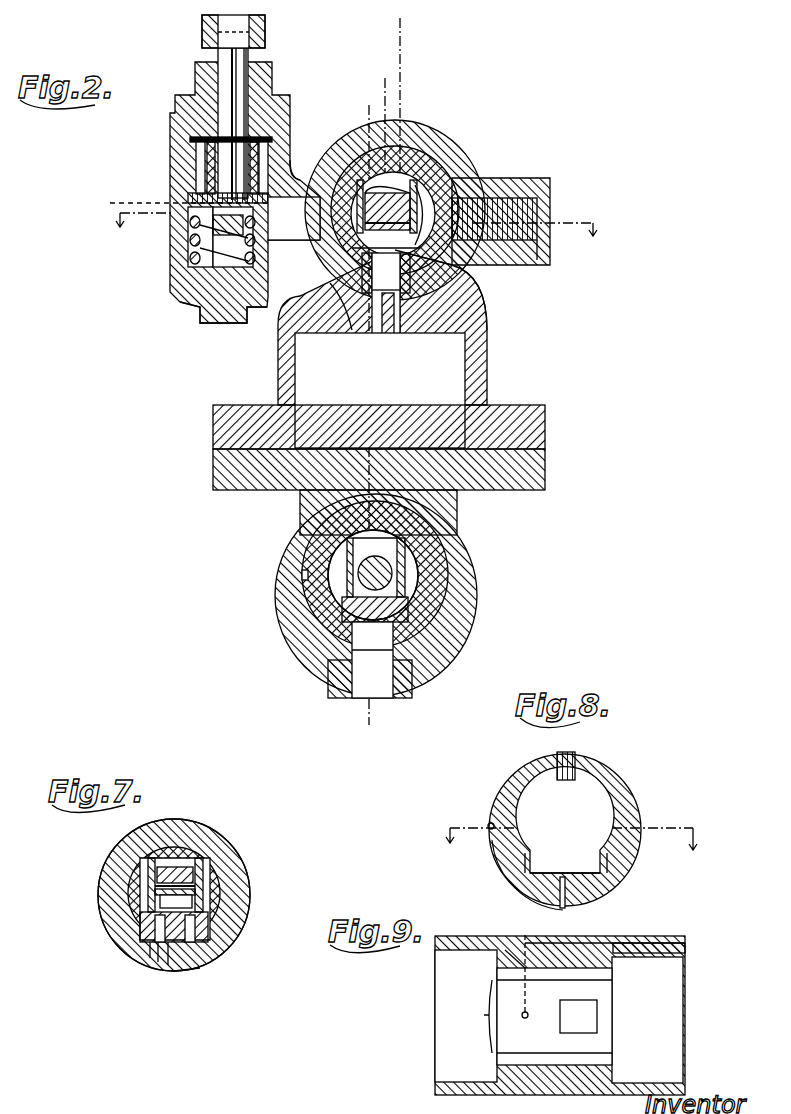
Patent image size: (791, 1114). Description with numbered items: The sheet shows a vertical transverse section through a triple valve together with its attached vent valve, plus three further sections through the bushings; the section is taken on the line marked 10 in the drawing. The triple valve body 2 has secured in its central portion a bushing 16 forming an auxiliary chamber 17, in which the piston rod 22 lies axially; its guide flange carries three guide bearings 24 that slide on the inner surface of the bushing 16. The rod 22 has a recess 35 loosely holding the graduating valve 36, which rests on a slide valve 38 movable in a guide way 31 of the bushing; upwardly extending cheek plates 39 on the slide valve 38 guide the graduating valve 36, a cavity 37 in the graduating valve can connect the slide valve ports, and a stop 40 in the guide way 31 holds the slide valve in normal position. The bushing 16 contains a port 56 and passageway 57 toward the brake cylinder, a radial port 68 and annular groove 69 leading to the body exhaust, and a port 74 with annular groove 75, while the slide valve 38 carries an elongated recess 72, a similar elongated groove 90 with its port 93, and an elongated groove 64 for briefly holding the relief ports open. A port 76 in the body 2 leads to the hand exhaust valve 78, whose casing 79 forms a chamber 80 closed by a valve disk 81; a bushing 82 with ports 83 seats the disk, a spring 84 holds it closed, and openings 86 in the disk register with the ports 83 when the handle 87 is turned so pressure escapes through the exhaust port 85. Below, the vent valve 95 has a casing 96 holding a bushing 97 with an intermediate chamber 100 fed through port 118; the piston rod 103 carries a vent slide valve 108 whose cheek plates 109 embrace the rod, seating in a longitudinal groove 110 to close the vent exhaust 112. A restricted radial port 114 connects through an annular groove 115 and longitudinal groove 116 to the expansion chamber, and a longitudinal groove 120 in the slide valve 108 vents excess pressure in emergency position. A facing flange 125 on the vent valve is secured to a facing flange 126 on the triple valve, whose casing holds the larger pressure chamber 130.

In FIG. 2, the body 2 is at (545, 185).
In FIG. 2, the fluid passage 10 is at (212, 224).
In FIG. 2, the bushing 16 is at (465, 142).
In FIG. 7, the bushing 16 is at (128, 840).
In FIG. 2, the auxiliary chamber 17 is at (455, 170).
In FIG. 7, the auxiliary chamber 17 is at (130, 903).
In FIG. 2, the piston rod 22 is at (392, 192).
In FIG. 7, the piston rod 22 is at (178, 866).
In FIG. 2, the guide bearings 24 is at (368, 190).
In FIG. 7, the guide way 31 is at (232, 940).
In FIG. 7, the recess 35 is at (200, 884).
In FIG. 2, the graduating valve 36 is at (440, 190).
In FIG. 7, the graduating valve 36 is at (198, 891).
In FIG. 7, the cavity 37 is at (195, 903).
In FIG. 2, the slide valve 38 is at (300, 300).
In FIG. 7, the slide valve 38 is at (210, 903).
In FIG. 2, the cheek plates 39 is at (360, 182).
In FIG. 7, the cheek plates 39 is at (148, 870).
In FIG. 2, the stop 40 is at (520, 262).
In FIG. 7, the port 56 is at (158, 948).
In FIG. 7, the passageway 57 is at (166, 950).
In FIG. 2, the elongated groove 64 is at (405, 295).
In FIG. 2, the radial port 68 is at (470, 300).
In FIG. 2, the annular groove 69 is at (462, 292).
In FIG. 2, the elongated recess 72 is at (282, 300).
In FIG. 2, the port 74 is at (360, 300).
In FIG. 2, the annular groove 75 is at (352, 262).
In FIG. 7, the annular groove 75 is at (148, 945).
In FIG. 2, the port 76 is at (292, 170).
In FIG. 2, the hand exhaust valve 78 is at (200, 75).
In FIG. 2, the casing 79 is at (196, 168).
In FIG. 2, the chamber 80 is at (190, 262).
In FIG. 2, the valve disk 81 is at (188, 197).
In FIG. 2, the bushing 82 is at (190, 160).
In FIG. 2, the ports 83 is at (205, 180).
In FIG. 2, the spring 84 is at (180, 300).
In FIG. 2, the exhaust port 85 is at (190, 138).
In FIG. 2, the openings 86 is at (177, 205).
In FIG. 2, the handle 87 is at (202, 25).
In FIG. 2, the elongated groove 90 is at (435, 280).
In FIG. 7, the port 93 is at (200, 968).
In FIG. 2, the vent valve 95 is at (278, 562).
In FIG. 2, the casing 96 is at (320, 590).
In FIG. 2, the bushing 97 is at (325, 525).
In FIG. 8, the bushing 97 is at (512, 778).
In FIG. 9, the bushing 97 is at (465, 936).
In FIG. 2, the intermediate chamber 100 is at (418, 563).
In FIG. 8, the intermediate chamber 100 is at (612, 800).
In FIG. 2, the piston rod 103 is at (390, 575).
In FIG. 2, the vent slide valve 108 is at (345, 610).
In FIG. 2, the cheek plates 109 is at (345, 552).
In FIG. 8, the longitudinal groove 110 is at (545, 873).
In FIG. 9, the longitudinal groove 110 is at (530, 994).
In FIG. 2, the vent exhaust 112 is at (412, 645).
In FIG. 9, the vent exhaust 112 is at (590, 1015).
In FIG. 8, the radial port 114 is at (565, 908).
In FIG. 8, the annular groove 115 is at (500, 873).
In FIG. 9, the annular groove 115 is at (505, 948).
In FIG. 2, the longitudinal groove 116 is at (300, 575).
In FIG. 8, the longitudinal groove 116 is at (488, 824).
In FIG. 9, the longitudinal groove 116 is at (655, 945).
In FIG. 8, the port 118 is at (580, 752).
In FIG. 2, the longitudinal groove 120 is at (395, 630).
In FIG. 2, the facing flange 125 is at (545, 468).
In FIG. 2, the facing flange 126 is at (545, 428).
In FIG. 2, the pressure chamber 130 is at (380, 390).